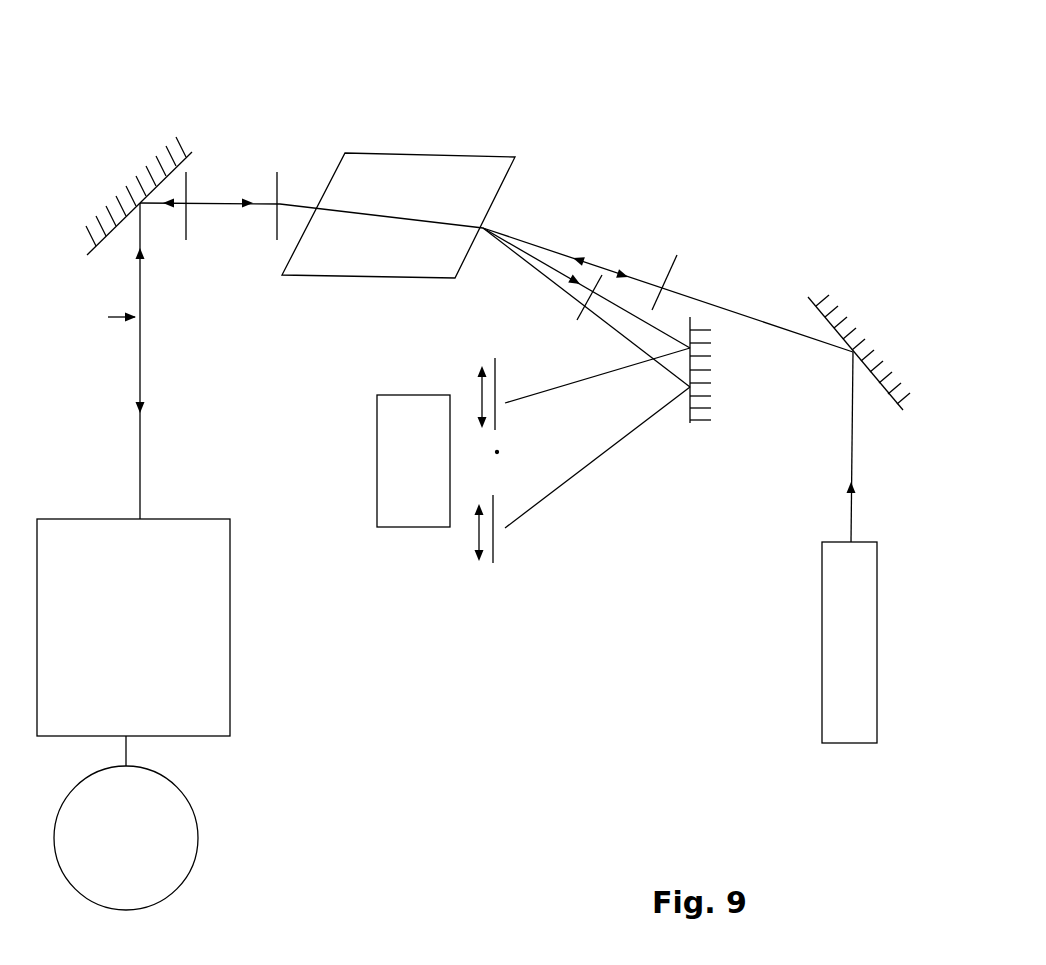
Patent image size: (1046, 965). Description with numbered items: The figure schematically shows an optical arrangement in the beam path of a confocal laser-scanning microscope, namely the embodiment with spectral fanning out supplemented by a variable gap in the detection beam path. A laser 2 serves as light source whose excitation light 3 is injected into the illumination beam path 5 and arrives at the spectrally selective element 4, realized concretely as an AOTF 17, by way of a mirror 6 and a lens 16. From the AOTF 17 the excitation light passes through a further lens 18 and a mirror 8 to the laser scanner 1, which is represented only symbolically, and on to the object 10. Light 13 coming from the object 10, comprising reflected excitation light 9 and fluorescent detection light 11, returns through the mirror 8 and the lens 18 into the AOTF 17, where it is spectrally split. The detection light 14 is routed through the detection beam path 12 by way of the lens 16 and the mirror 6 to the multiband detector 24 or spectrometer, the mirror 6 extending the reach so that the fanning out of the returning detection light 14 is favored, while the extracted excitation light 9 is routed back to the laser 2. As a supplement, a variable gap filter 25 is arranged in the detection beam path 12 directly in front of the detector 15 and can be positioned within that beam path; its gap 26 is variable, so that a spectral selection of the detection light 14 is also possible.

The laser scanner 1 is at (230, 672).
The laser 2 is at (820, 662).
The excitation light 3 is at (850, 505).
The spectrally selective element 4 is at (398, 169).
The AOTF 17 is at (410, 155).
The illumination beam path 5 is at (109, 320).
The mirror 6 is at (703, 408).
The mirror 8 is at (183, 160).
The excitation light 9 is at (597, 263).
The detection light 11 is at (138, 348).
The object 10 is at (126, 823).
The detection beam path 12 is at (553, 280).
The light coming from object 13 is at (263, 197).
The detection light 14 is at (568, 457).
The detector 15 is at (395, 528).
The multiband detector 24 is at (396, 522).
The lens 16 is at (677, 258).
The lens 18 is at (186, 223).
The variable gap filter 25 is at (490, 567).
The gap 26 is at (497, 453).